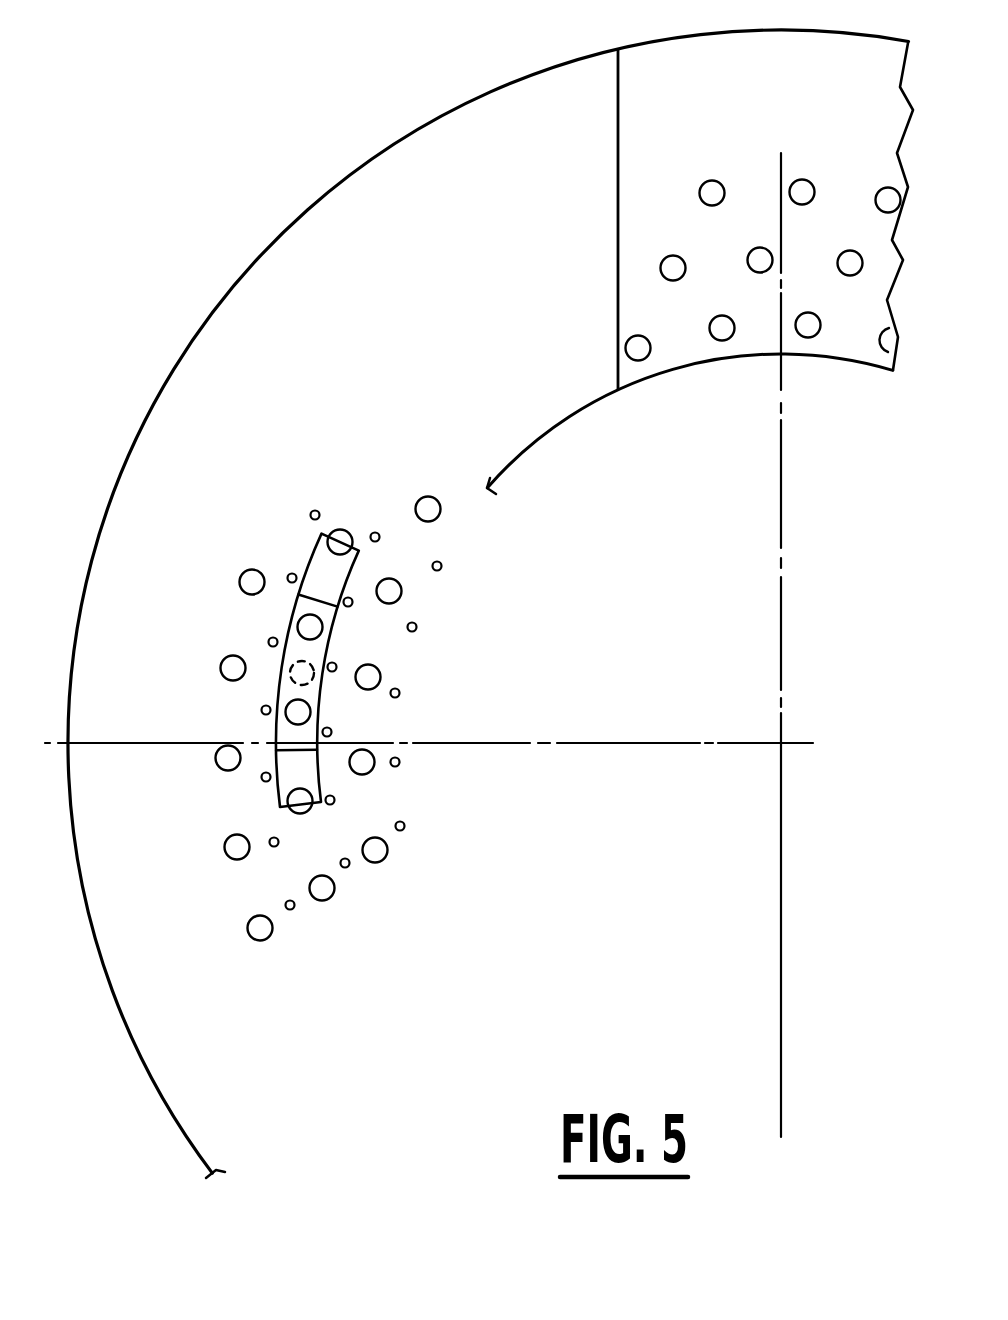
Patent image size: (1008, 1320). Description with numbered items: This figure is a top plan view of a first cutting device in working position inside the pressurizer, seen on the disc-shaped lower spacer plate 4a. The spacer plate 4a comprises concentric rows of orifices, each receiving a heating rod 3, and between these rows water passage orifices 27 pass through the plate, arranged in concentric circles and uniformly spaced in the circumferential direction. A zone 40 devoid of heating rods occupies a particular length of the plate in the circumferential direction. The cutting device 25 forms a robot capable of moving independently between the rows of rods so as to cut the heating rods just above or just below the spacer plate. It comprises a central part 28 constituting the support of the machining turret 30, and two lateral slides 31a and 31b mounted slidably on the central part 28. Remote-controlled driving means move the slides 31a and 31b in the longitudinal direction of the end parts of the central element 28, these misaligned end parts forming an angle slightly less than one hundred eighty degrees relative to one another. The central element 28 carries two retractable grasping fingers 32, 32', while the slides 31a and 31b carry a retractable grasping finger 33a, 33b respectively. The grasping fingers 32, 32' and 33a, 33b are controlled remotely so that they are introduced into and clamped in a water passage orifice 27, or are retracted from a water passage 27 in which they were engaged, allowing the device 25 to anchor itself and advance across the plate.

The lower spacer plate 4a is at (227, 327).
The zone devoid of heating rods 40 is at (620, 207).
The cutting device 25 is at (358, 567).
The machining turret 30 is at (283, 688).
The lateral slide 31a is at (320, 575).
The lateral slide 31b is at (302, 780).
The retractable grasping finger 33a is at (343, 530).
The retractable grasping finger 33b is at (300, 815).
The retractable grasping finger 32 is at (392, 615).
The retractable grasping finger 32' is at (237, 722).
The central part 28 is at (320, 700).
The water passage orifice 27 is at (377, 677).
The heating rod 3 is at (268, 642).